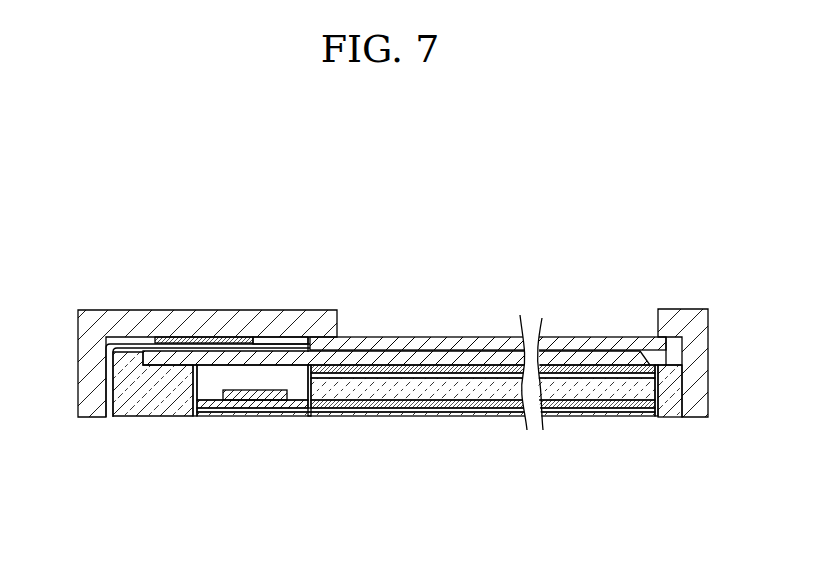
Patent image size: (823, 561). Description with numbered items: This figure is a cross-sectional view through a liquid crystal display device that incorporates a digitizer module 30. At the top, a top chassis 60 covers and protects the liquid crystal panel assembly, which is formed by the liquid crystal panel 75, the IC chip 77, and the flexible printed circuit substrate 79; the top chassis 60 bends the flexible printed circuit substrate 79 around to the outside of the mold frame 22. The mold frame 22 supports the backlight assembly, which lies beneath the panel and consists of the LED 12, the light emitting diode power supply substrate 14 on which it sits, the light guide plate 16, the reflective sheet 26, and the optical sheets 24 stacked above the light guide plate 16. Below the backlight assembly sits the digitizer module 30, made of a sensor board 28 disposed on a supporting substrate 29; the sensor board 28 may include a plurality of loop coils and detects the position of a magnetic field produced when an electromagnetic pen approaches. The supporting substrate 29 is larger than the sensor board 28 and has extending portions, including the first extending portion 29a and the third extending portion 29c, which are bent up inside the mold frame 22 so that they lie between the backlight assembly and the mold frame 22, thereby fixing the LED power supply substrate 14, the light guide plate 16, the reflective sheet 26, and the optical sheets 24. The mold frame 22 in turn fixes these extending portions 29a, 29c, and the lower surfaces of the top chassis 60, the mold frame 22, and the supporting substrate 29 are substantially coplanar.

The top chassis 60 is at (128, 322).
The IC chip 77 is at (216, 343).
The optical sheets 24 is at (388, 357).
The liquid crystal panel 75 is at (489, 332).
The flexible printed circuit substrate 79 is at (112, 373).
The mold frame 22 is at (147, 398).
The first extending portion 29a is at (192, 399).
The light emitting diode power supply substrate 14 is at (218, 407).
The LED 12 is at (258, 397).
The light guide plate 16 is at (352, 390).
The reflective sheet 26 is at (405, 404).
The sensor board 28 is at (455, 406).
The supporting substrate 29 is at (500, 412).
The digitizer module 30 is at (426, 467).
The third extending portion 29c is at (657, 386).